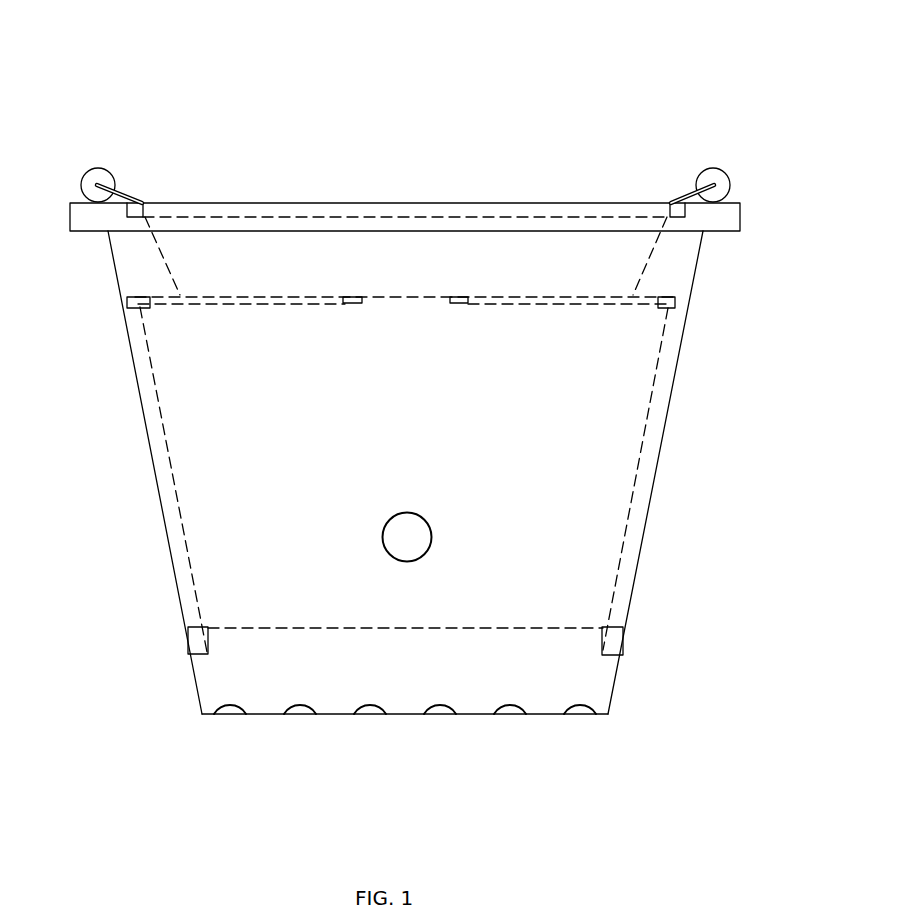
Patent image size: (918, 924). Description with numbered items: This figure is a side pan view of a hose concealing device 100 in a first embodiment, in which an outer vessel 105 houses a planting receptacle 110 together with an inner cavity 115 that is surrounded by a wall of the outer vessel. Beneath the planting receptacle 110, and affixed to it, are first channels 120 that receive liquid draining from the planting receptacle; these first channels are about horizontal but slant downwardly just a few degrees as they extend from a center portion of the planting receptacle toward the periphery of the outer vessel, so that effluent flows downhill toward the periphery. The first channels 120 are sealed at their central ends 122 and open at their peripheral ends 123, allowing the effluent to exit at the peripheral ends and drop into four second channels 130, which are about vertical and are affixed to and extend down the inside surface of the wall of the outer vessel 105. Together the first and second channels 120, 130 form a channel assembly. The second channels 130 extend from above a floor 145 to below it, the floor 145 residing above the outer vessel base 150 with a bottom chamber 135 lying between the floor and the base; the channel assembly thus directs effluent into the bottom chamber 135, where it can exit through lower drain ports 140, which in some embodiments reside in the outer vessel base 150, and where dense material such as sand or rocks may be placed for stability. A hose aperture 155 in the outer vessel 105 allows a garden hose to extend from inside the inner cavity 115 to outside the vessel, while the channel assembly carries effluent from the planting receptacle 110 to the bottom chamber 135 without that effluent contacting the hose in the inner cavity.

The hose concealing device 100 is at (527, 106).
The outer vessel 105 is at (663, 437).
The planting receptacle 110 is at (652, 257).
The inner cavity 115 is at (600, 514).
The first channels 120 is at (406, 414).
The central ends 122 is at (362, 302).
The peripheral ends 123 is at (127, 300).
The second channels 130 is at (195, 583).
The bottom chamber 135 is at (597, 678).
The lower drain ports 140 is at (230, 716).
The floor 145 is at (247, 628).
The outer vessel base 150 is at (403, 716).
The hose aperture 155 is at (383, 540).